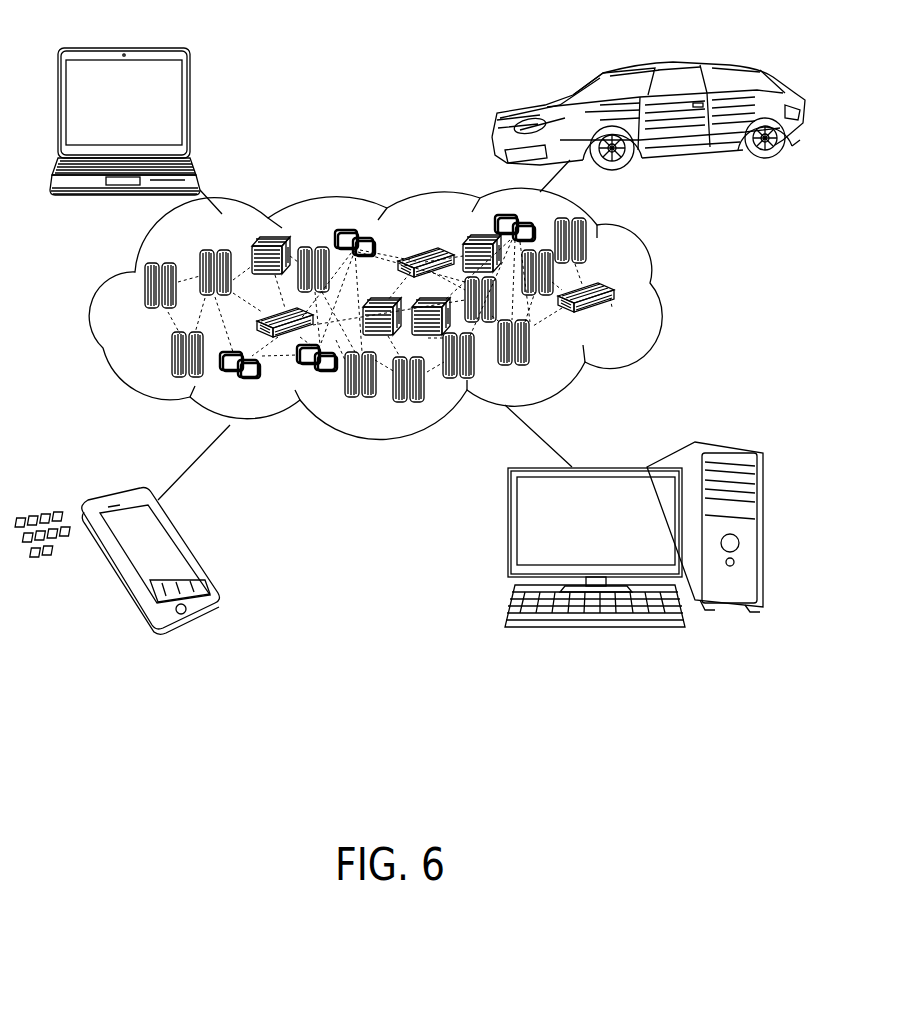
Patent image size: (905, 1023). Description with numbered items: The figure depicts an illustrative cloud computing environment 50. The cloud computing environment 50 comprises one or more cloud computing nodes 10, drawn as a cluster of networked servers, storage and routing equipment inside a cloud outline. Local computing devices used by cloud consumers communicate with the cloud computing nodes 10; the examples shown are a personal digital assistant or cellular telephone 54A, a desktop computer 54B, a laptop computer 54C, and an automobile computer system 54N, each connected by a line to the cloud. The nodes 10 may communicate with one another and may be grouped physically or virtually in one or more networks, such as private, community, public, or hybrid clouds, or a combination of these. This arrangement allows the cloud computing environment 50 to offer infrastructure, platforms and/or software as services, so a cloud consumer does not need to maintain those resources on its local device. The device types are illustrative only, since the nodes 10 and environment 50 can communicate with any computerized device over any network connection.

The cloud computing node 10 is at (611, 306).
The cloud computing environment 50 is at (655, 297).
The personal digital assistant (PDA) or cellular telephone 54A is at (167, 548).
The desktop computer 54B is at (674, 440).
The laptop computer 54C is at (172, 118).
The automobile computer system 54N is at (497, 118).